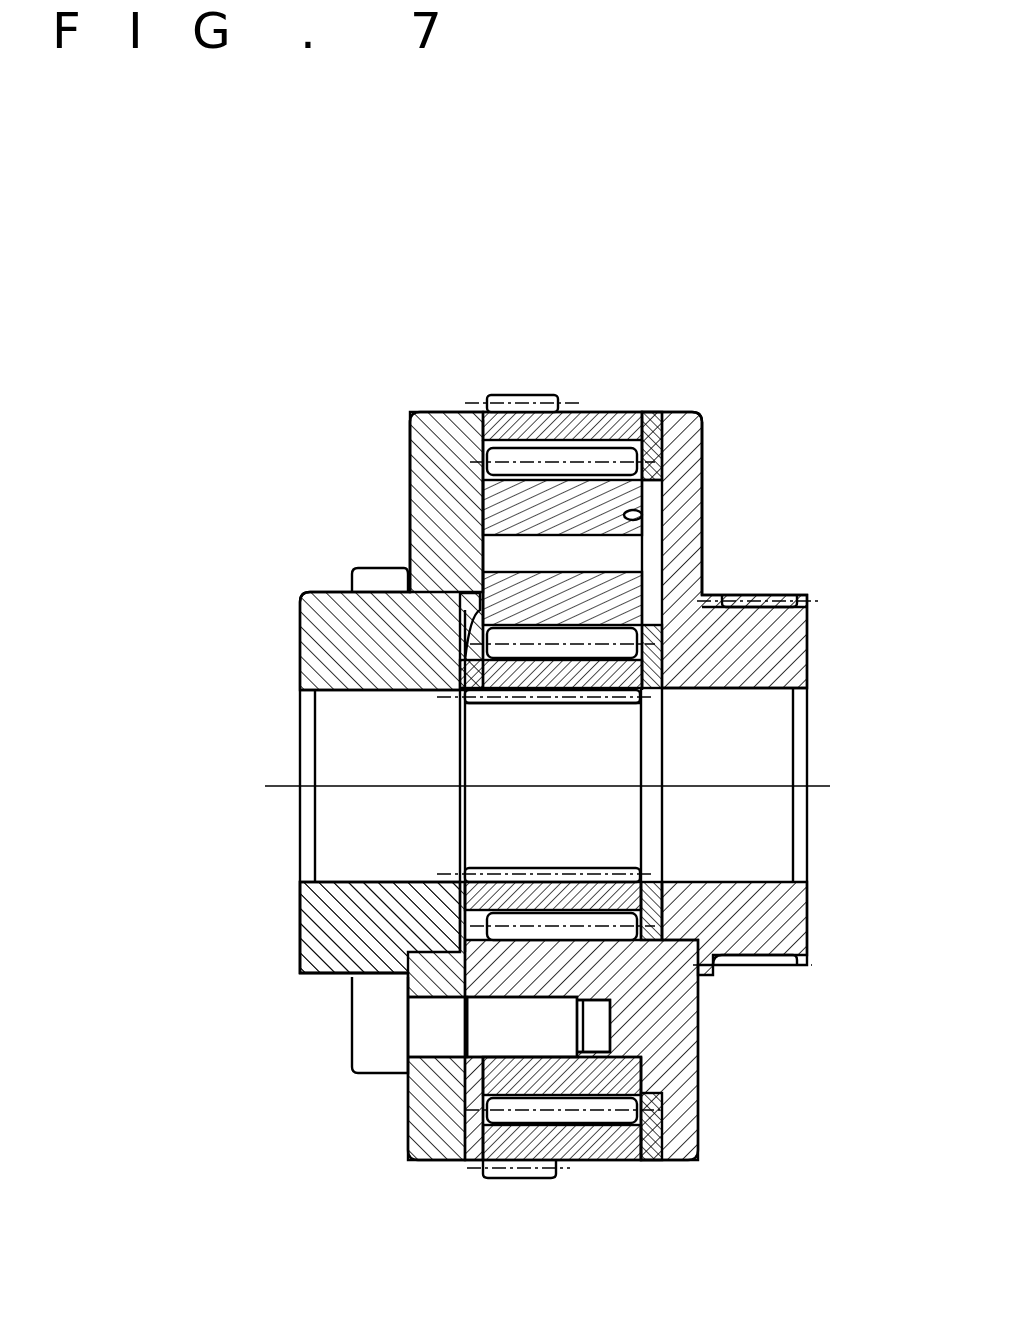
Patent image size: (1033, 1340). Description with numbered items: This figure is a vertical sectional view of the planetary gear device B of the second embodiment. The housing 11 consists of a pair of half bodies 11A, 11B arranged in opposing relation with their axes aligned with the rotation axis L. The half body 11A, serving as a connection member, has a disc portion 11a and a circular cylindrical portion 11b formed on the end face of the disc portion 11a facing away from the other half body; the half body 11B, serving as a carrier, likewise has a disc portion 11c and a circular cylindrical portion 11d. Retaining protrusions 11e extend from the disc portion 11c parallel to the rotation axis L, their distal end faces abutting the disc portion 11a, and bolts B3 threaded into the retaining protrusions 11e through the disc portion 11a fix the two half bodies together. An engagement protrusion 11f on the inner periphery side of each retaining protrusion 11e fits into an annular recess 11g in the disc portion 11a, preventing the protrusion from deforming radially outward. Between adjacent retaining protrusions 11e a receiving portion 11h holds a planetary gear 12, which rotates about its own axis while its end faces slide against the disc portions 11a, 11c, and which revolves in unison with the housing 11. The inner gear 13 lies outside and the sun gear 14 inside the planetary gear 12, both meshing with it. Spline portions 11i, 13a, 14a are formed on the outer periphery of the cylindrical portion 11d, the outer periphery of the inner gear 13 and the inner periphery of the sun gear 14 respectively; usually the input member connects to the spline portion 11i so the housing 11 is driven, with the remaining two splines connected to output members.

The housing 11 is at (640, 278).
The half body 11A is at (447, 413).
The half body 11B is at (693, 412).
The disc portion 11a is at (437, 472).
The circular cylindrical portion 11b is at (330, 625).
The disc portion 11c is at (695, 437).
The circular cylindrical portion 11d is at (770, 635).
The retaining protrusion 11e is at (510, 1077).
The engagement protrusion 11f is at (470, 954).
The recess 11g is at (467, 998).
The receiving portion 11h is at (650, 512).
The spline portion 11i is at (755, 598).
The planetary gear 12 is at (590, 503).
The inner gear 13 is at (590, 1140).
The spline portion 13a is at (513, 1180).
The sun gear 14 is at (475, 670).
The spline portion 14a is at (517, 706).
The planetary gear device B is at (757, 385).
The bolt B3 is at (372, 568).
The rotation axis L is at (822, 785).